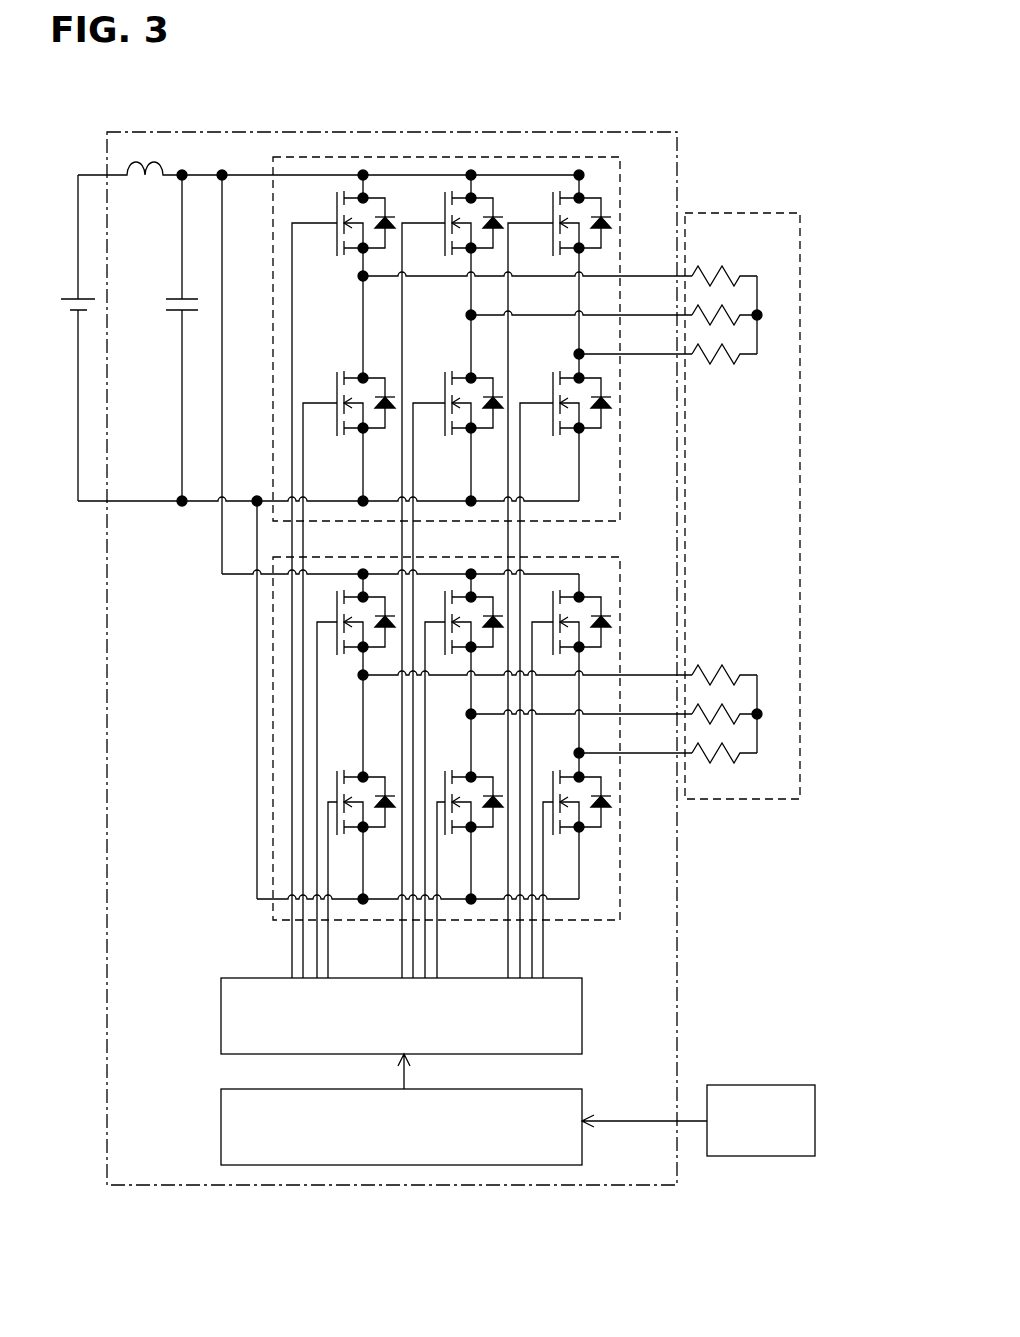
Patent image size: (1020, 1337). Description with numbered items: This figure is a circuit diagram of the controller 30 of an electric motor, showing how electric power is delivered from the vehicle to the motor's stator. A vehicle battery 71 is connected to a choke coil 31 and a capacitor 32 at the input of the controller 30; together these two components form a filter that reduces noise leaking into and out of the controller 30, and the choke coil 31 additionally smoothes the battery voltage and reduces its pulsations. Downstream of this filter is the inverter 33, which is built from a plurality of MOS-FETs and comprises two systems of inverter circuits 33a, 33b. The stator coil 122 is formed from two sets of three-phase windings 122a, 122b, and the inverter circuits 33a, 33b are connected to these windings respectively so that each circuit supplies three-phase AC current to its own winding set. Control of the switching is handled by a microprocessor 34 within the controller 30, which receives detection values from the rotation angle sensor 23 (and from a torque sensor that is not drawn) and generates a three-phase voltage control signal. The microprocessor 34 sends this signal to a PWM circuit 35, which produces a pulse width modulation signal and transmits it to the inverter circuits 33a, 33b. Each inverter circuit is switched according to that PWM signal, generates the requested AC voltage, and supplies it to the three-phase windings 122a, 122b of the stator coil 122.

The controller 30 is at (212, 131).
The choke coil 31 is at (139, 142).
The capacitor 32 is at (160, 330).
The inverter 33 is at (178, 557).
The inverter circuit 33a is at (272, 458).
The inverter circuit 33b is at (273, 748).
The microprocessor 34 is at (221, 1123).
The PWM circuit 35 is at (221, 1012).
The vehicle battery 71 is at (68, 253).
The stator coil 122 is at (742, 212).
The three-phase windings 122a is at (747, 390).
The three-phase windings 122b is at (743, 639).
The rotation angle sensor 23 is at (782, 1085).